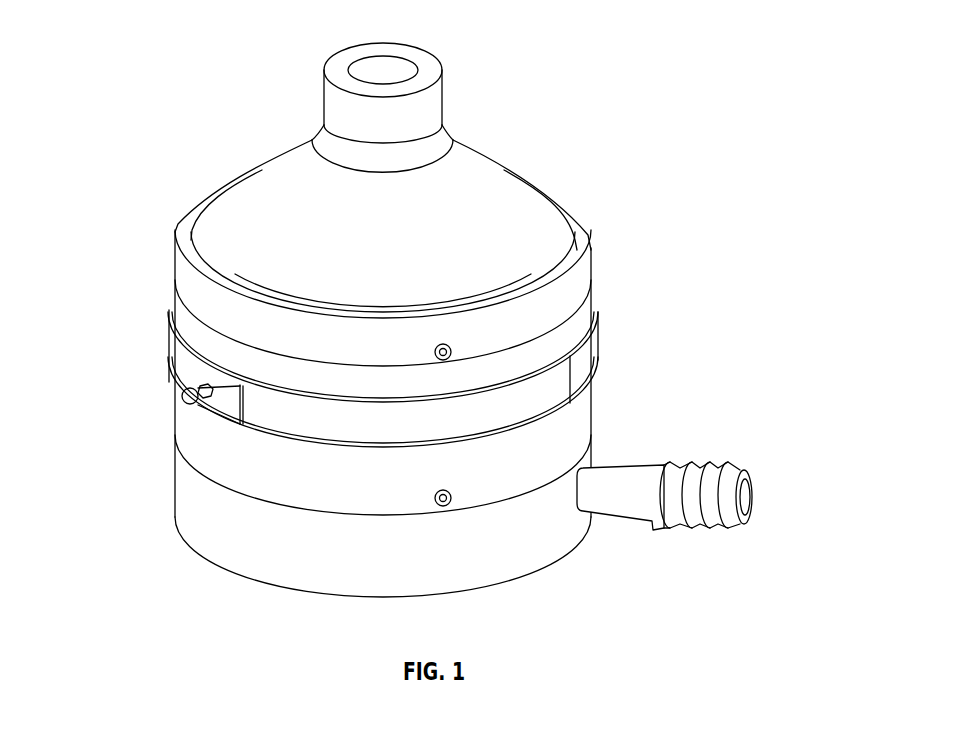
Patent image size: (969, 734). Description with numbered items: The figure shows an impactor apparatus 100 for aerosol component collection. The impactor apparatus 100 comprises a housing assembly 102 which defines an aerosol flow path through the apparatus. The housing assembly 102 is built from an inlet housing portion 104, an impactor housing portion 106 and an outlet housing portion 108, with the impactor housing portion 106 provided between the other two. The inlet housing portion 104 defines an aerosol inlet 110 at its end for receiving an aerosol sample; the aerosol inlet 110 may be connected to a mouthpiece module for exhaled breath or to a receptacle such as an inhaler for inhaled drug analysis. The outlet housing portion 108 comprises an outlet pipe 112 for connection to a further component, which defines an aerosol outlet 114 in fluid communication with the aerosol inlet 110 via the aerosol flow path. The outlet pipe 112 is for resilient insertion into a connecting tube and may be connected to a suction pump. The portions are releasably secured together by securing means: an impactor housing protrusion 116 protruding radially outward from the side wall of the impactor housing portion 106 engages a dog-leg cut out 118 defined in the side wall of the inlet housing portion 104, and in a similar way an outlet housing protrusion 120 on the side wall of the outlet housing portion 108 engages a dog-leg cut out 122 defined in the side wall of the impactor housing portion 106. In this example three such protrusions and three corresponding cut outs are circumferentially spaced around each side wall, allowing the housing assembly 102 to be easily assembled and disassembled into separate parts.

The impactor apparatus 100 is at (430, 339).
The housing assembly 102 is at (593, 267).
The inlet housing portion 104 is at (480, 153).
The impactor housing portion 106 is at (175, 315).
The outlet housing portion 108 is at (178, 487).
The aerosol inlet 110 is at (364, 62).
The outlet pipe 112 is at (652, 522).
The aerosol outlet 114 is at (764, 523).
The impactor housing protrusion 116 is at (455, 348).
The dog-leg cut out 118 is at (436, 350).
The outlet housing protrusion 120 is at (454, 502).
The dog-leg cut out 122 is at (434, 503).